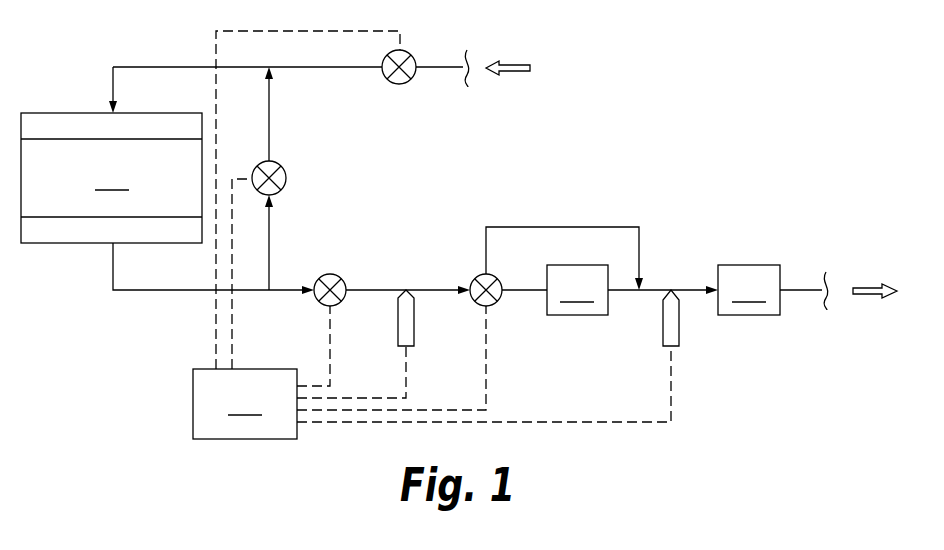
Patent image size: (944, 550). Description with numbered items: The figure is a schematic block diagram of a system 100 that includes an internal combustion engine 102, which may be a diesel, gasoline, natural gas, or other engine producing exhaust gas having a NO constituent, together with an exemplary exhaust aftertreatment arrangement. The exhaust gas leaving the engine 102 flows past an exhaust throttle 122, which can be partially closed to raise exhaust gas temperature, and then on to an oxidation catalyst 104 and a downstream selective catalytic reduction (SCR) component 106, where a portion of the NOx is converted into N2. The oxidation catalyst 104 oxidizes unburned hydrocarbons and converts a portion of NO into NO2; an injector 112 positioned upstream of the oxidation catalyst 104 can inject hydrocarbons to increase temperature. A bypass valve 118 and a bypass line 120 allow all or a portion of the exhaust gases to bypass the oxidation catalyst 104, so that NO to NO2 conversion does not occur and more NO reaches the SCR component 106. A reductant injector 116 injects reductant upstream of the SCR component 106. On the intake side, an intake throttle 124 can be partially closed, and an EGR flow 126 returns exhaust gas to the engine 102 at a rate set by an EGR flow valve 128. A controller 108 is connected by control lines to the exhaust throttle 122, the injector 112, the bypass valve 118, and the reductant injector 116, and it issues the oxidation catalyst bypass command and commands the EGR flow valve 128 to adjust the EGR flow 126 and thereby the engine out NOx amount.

The system 100 is at (625, 68).
The internal combustion engine 102 is at (111, 178).
The oxidation catalyst 104 is at (577, 290).
The selective catalytic reduction (SCR) component 106 is at (749, 290).
The controller 108 is at (245, 404).
The injector 112 is at (414, 314).
The reductant injector 116 is at (679, 330).
The bypass valve 118 is at (476, 275).
The bypass line 120 is at (558, 227).
The exhaust throttle 122 is at (345, 278).
The intake throttle 124 is at (405, 84).
The EGR flow 126 is at (269, 118).
The EGR flow valve 128 is at (286, 180).